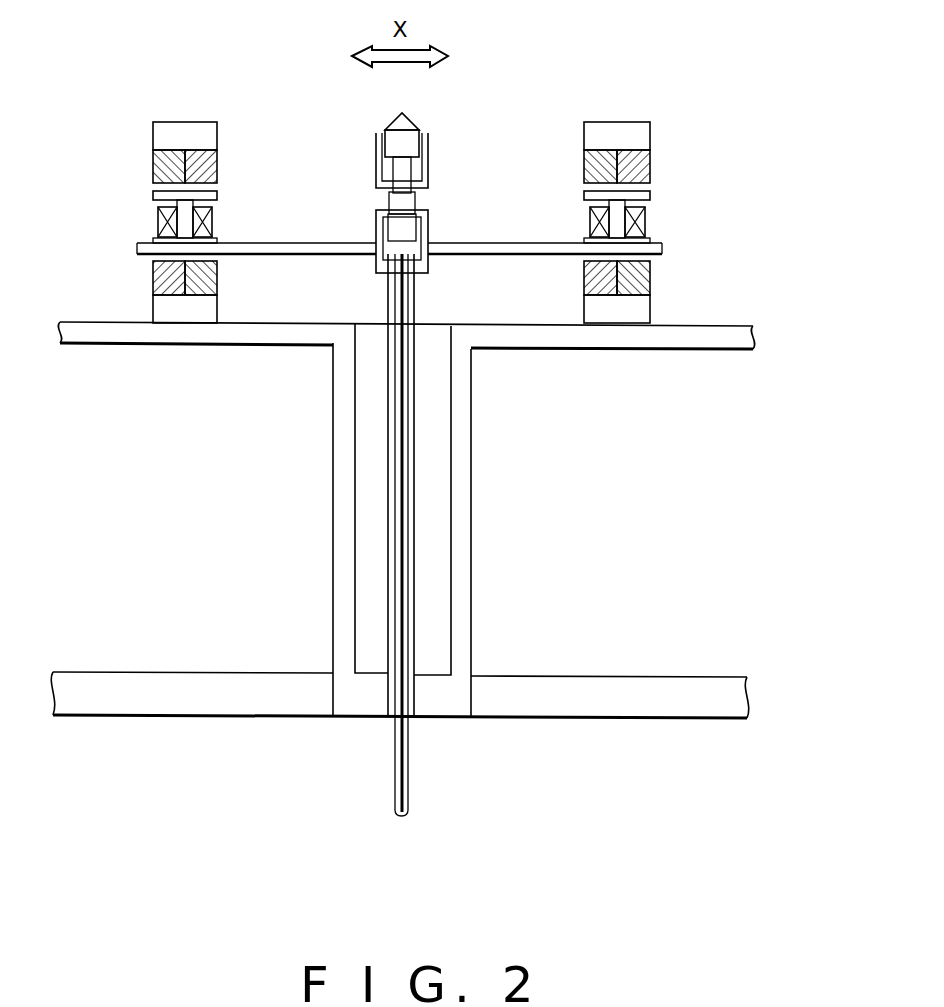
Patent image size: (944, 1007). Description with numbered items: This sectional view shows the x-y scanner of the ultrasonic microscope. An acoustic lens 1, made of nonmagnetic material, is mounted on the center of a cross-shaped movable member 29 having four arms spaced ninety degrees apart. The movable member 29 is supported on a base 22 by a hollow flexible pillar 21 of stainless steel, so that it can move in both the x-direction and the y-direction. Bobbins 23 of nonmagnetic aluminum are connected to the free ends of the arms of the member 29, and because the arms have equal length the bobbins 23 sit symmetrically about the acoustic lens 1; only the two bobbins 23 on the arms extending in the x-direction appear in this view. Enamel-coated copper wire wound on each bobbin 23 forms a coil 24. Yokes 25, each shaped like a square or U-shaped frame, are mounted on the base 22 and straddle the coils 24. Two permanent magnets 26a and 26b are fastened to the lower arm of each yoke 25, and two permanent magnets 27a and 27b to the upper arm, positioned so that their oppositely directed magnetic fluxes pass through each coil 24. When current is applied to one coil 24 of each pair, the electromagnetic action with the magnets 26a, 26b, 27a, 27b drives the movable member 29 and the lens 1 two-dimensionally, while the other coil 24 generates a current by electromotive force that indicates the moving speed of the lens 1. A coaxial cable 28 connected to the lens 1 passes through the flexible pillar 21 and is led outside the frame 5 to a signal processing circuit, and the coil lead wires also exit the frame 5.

The acoustic lens 1 is at (410, 118).
The frame 5 is at (650, 680).
The hollow flexible pillar 21 is at (414, 535).
The base 22 is at (88, 333).
The bobbin 23 is at (153, 196).
The coil 24 is at (158, 222).
The yoke 25 is at (176, 129).
The permanent magnet 26a is at (153, 284).
The permanent magnet 26b is at (217, 285).
The permanent magnet 27a is at (153, 158).
The permanent magnet 27b is at (217, 158).
The coaxial cable 28 is at (405, 763).
The cross-shaped movable member 29 is at (310, 244).